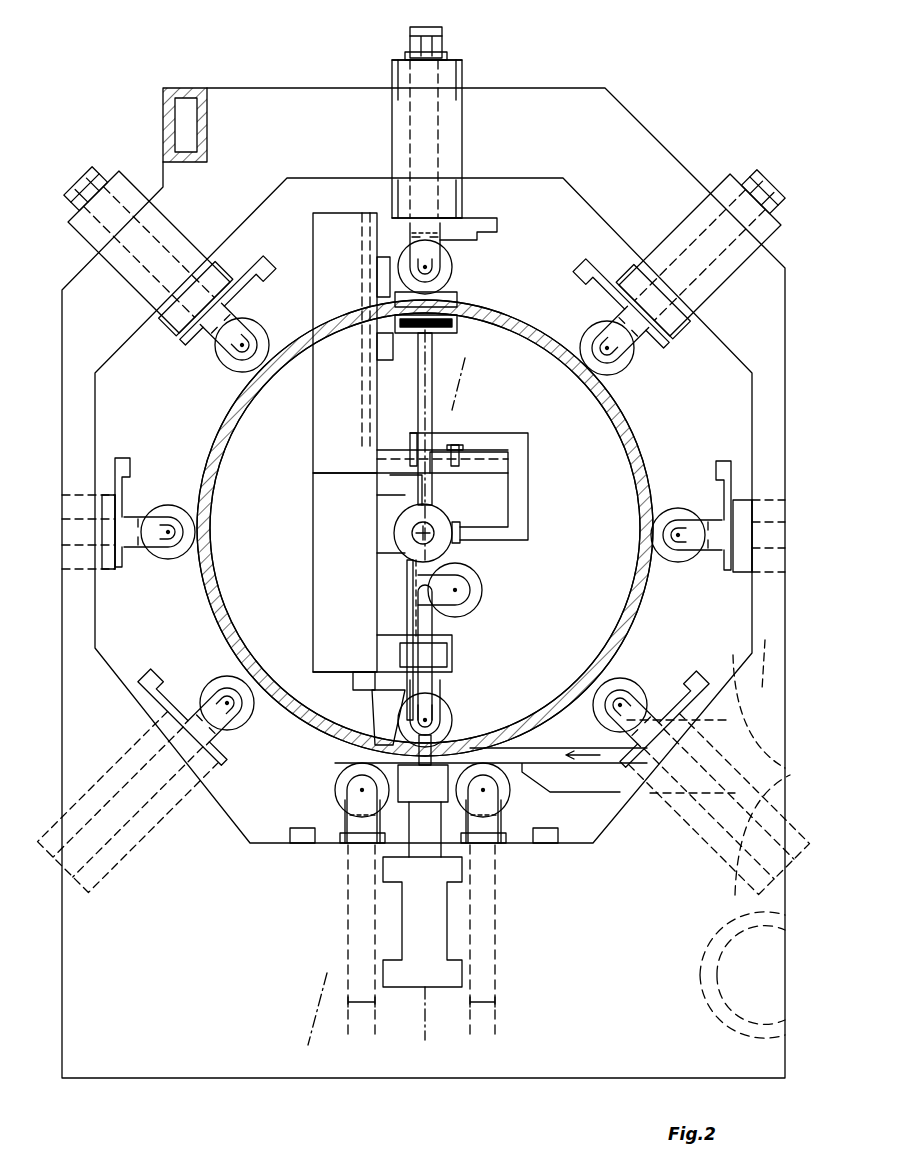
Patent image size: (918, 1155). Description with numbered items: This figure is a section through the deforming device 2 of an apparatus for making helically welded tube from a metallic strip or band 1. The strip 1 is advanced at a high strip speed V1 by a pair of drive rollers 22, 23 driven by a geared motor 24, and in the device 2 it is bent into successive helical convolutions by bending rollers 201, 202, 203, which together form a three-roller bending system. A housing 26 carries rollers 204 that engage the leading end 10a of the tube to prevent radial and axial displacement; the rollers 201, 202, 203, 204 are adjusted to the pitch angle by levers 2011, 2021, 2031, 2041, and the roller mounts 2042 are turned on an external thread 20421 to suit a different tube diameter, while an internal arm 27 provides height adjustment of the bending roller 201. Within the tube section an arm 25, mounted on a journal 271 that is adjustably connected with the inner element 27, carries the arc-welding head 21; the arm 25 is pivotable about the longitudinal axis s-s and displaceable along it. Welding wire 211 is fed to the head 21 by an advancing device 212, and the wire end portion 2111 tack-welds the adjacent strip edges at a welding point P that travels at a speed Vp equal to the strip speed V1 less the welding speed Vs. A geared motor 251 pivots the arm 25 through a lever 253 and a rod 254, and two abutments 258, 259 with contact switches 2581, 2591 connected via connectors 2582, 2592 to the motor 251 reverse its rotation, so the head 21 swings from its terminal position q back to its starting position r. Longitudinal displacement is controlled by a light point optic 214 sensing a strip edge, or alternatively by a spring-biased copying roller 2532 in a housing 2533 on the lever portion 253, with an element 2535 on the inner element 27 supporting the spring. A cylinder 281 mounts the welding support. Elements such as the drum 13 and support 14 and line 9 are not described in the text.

The metallic strip or band 1 is at (622, 765).
The deforming device 2 is at (650, 137).
The axis line 9 is at (462, 372).
The leading end of the tube 10a is at (242, 598).
The drum 13 is at (292, 383).
The support housing 14 is at (325, 326).
The arc-welding head 21 is at (442, 690).
The drive roller 22 is at (759, 687).
The drive roller 23 is at (716, 885).
The geared motor 24 is at (705, 1022).
The arm 25 is at (403, 628).
The housing 26 is at (325, 142).
The internal arm (inner element) 27 is at (350, 420).
The bending roller 201 is at (455, 705).
The bending roller 202 is at (510, 800).
The bending roller 203 is at (335, 790).
The rollers 204 is at (450, 273).
The welding wire 211 is at (430, 685).
The advancing device 212 is at (476, 590).
The light point optic 214 is at (372, 715).
The geared motor 251 is at (452, 508).
The lever (portion of the arm) 253 is at (432, 377).
The rod 254 is at (430, 540).
The abutment 258 is at (377, 458).
The abutment 259 is at (462, 450).
The journal 271 is at (383, 495).
The cylinder 281 is at (440, 932).
The lever 2011 is at (365, 672).
The lever 2021 is at (547, 842).
The lever 2031 is at (312, 843).
The lever 2041 is at (493, 222).
The roller mount 2042 is at (407, 83).
The end portion of the welding wire 2111 is at (442, 725).
The copying roller 2532 is at (435, 300).
The housing 2533 is at (458, 328).
The element 2535 is at (388, 290).
The contact switch 2581 is at (410, 433).
The connector 2582 is at (530, 522).
The contact switch 2591 is at (455, 445).
The connector 2592 is at (530, 470).
The external thread 20421 is at (465, 78).
The welding point P is at (450, 752).
The strip speed V1 is at (582, 750).
The welding speed Vs is at (423, 784).
The welding point speed Vp is at (389, 743).
The terminal position q- q is at (315, 1018).
The starting position r- r is at (424, 1052).
The longitudinal axis of the tube s-s is at (418, 531).